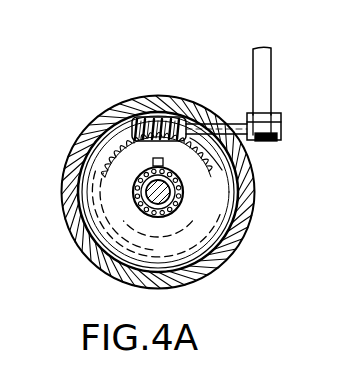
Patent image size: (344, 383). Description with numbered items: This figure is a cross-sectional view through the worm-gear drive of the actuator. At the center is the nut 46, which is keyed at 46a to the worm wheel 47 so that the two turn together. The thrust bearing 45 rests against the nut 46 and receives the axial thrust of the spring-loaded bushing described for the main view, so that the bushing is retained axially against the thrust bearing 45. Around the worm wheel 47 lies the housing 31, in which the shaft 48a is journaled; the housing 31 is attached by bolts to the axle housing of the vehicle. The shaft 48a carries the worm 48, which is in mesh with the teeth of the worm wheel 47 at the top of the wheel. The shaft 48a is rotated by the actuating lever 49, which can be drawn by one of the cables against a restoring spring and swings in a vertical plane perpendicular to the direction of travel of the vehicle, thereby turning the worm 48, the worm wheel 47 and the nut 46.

The housing 31 is at (65, 205).
The thrust bearing 45 is at (177, 195).
The nut 46 is at (182, 206).
The key 46a is at (163, 163).
The worm wheel 47 is at (98, 152).
The worm 48 is at (150, 116).
The shaft 48a is at (215, 146).
The actuating lever 49 is at (267, 82).